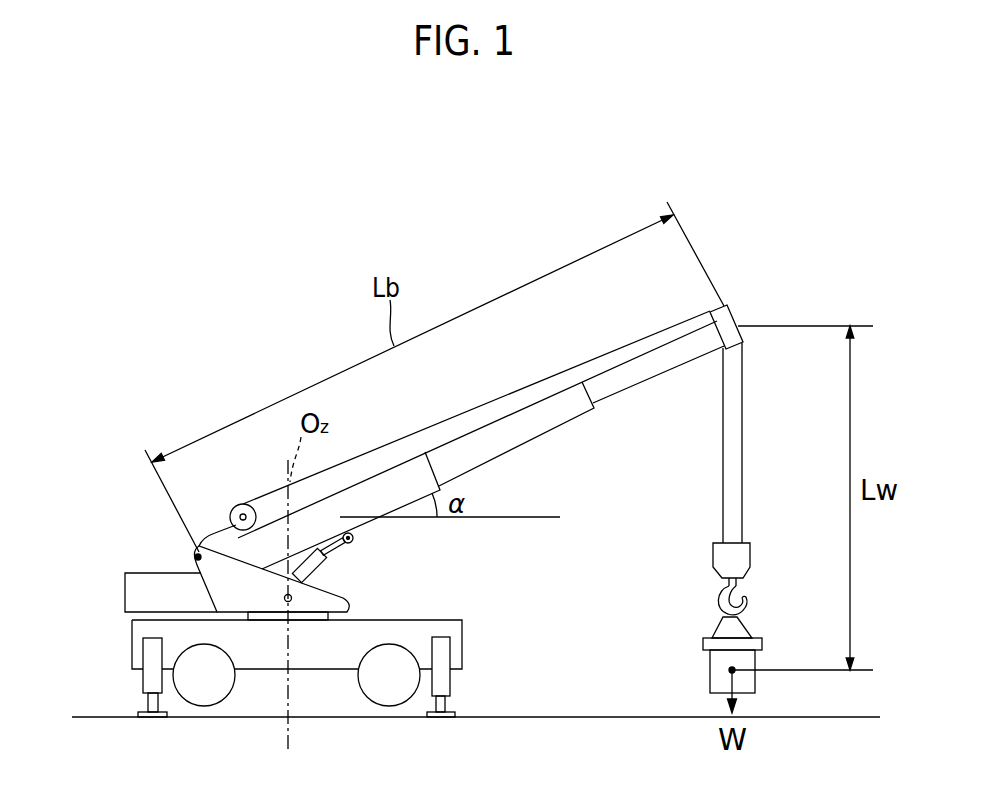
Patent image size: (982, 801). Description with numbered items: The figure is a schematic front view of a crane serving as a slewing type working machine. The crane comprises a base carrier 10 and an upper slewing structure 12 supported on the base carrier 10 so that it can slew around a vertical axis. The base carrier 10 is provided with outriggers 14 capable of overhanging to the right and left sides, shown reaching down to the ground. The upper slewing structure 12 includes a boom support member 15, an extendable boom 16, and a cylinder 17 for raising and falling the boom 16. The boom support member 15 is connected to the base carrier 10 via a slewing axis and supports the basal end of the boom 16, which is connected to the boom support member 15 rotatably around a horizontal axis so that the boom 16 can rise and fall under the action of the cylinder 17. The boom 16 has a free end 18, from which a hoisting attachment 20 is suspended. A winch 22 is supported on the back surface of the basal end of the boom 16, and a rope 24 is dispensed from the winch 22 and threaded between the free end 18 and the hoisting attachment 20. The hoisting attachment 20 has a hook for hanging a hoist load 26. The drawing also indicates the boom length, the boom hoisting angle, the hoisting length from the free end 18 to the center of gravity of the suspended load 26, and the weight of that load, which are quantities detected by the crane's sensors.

The base carrier 10 is at (445, 620).
The upper slewing structure 12 is at (125, 585).
The outriggers 14 is at (145, 690).
The boom support member 15 is at (214, 540).
The extendable boom 16 is at (505, 417).
The cylinder 17 is at (330, 574).
The free end 18 is at (723, 306).
The hoisting attachment 20 is at (744, 558).
The winch 22 is at (236, 502).
The rope 24 is at (604, 356).
The hoist load 26 is at (703, 643).